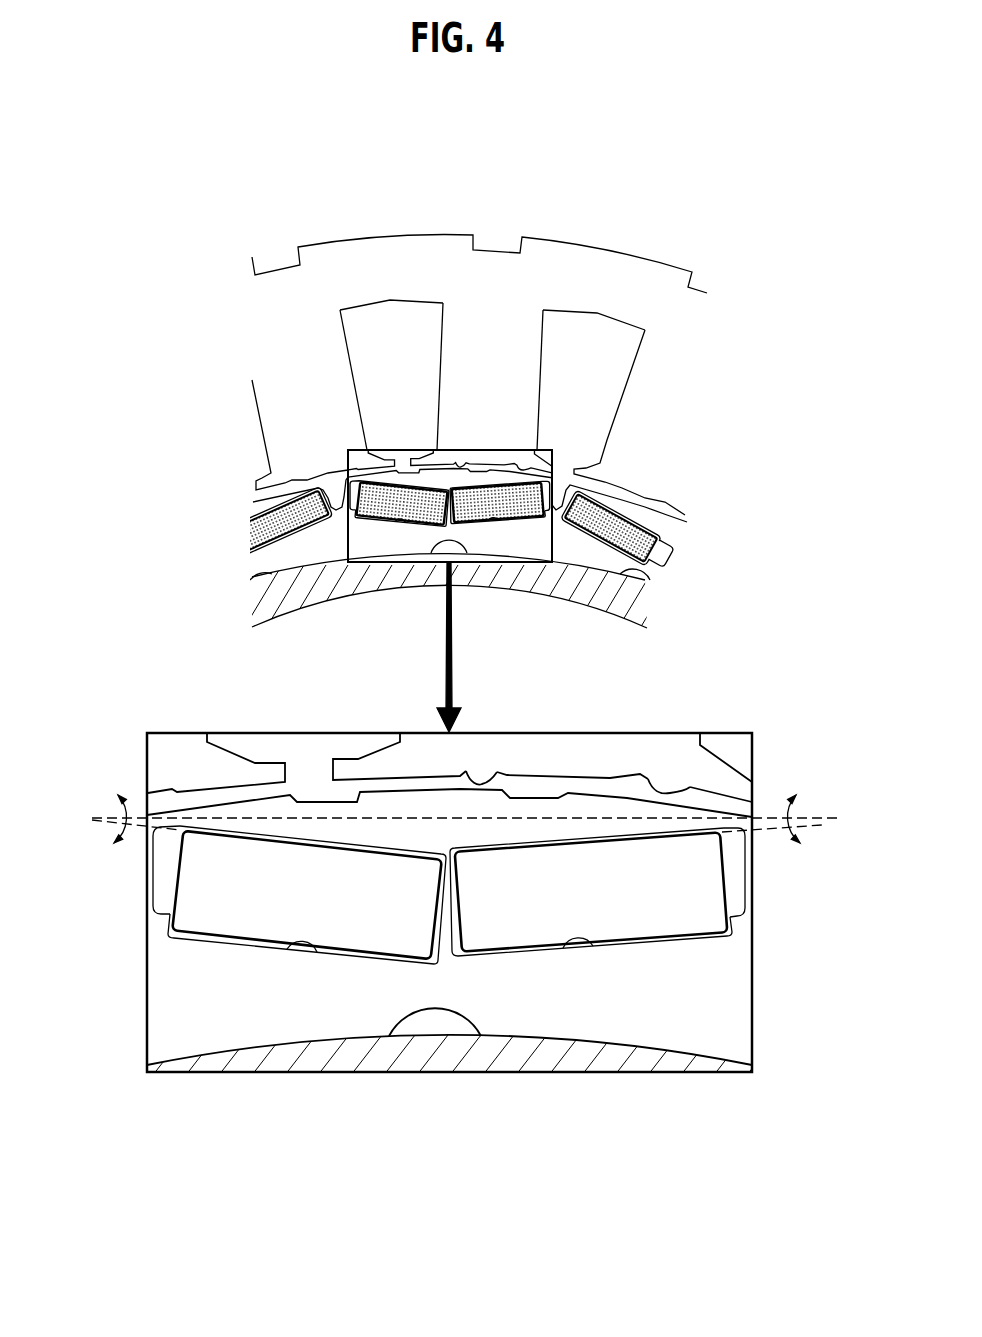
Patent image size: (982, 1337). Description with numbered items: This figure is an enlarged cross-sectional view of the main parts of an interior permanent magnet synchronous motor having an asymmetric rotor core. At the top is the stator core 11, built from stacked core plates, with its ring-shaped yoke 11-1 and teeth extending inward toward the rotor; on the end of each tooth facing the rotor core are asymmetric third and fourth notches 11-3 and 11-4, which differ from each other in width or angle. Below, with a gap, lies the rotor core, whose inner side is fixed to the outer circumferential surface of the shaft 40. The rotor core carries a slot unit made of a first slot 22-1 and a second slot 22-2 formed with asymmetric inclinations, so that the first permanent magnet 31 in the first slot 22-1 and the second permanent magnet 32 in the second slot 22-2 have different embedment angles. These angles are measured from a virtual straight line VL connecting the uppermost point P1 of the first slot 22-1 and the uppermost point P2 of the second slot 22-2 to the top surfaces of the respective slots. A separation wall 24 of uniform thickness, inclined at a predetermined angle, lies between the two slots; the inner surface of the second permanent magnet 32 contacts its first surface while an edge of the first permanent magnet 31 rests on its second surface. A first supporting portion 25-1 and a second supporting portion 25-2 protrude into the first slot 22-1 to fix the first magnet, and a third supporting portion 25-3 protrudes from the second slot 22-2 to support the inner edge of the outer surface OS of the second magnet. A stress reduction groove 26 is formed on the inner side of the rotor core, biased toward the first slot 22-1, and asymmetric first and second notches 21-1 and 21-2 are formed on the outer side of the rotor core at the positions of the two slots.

The stator core 11 is at (655, 251).
The yoke 11-1 is at (568, 273).
The third notch 11-3 is at (499, 777).
The fourth notch 11-4 is at (680, 792).
The first notch 21-1 is at (318, 800).
The second notch 21-2 is at (530, 798).
The first slot 22-1 is at (315, 945).
The second slot 22-2 is at (590, 944).
The separation wall 24 is at (447, 947).
The first supporting portion 25-1 is at (447, 877).
The second supporting portion 25-2 is at (157, 908).
The third supporting portion 25-3 is at (730, 923).
The stress reduction groove 26 is at (448, 1007).
The first permanent magnet 31 is at (223, 925).
The second permanent magnet 32 is at (680, 923).
The shaft 40 is at (575, 588).
The uppermost point of the first slot P1 is at (233, 831).
The uppermost point of the second slot P2 is at (680, 823).
The virtual straight line VL is at (620, 818).
The outer surface OS is at (727, 892).